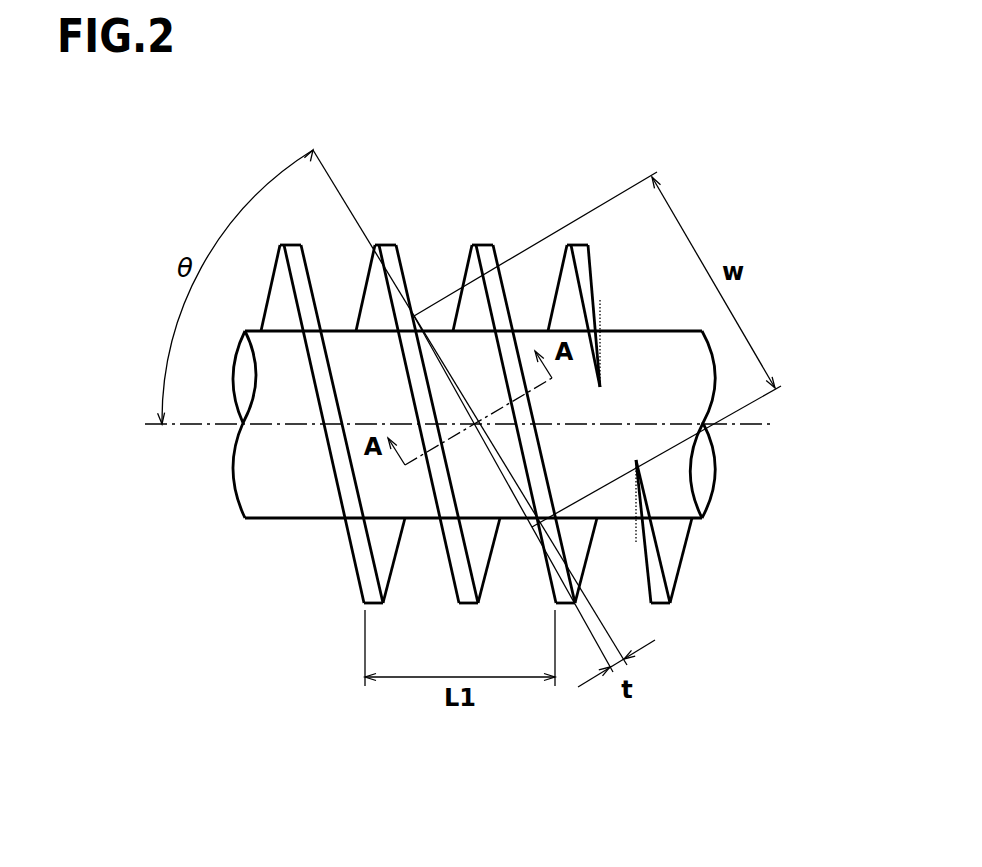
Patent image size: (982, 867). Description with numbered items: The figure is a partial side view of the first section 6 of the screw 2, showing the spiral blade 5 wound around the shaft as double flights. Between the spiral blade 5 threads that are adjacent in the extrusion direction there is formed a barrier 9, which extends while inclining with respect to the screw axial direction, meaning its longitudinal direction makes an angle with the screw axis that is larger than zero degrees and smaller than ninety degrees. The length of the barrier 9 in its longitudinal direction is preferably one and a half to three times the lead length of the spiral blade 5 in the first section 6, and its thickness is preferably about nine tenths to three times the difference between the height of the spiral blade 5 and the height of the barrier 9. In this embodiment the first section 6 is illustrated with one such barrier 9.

The screw 2 is at (506, 448).
The spiral blade 5 is at (476, 461).
The first section 6 is at (464, 530).
The barrier 9 is at (435, 355).